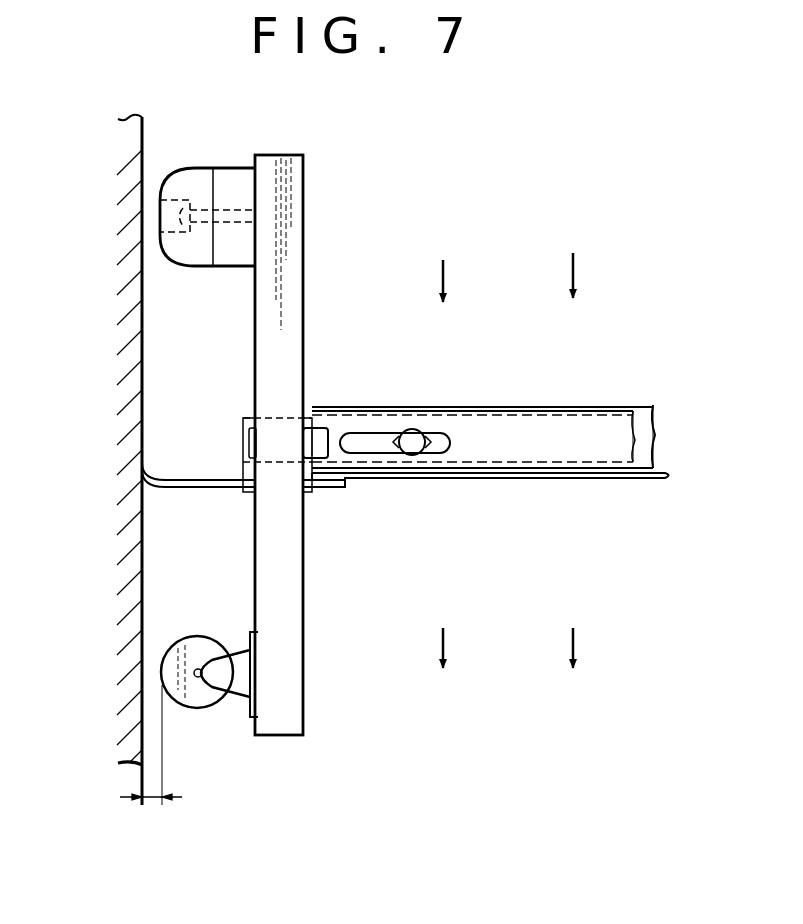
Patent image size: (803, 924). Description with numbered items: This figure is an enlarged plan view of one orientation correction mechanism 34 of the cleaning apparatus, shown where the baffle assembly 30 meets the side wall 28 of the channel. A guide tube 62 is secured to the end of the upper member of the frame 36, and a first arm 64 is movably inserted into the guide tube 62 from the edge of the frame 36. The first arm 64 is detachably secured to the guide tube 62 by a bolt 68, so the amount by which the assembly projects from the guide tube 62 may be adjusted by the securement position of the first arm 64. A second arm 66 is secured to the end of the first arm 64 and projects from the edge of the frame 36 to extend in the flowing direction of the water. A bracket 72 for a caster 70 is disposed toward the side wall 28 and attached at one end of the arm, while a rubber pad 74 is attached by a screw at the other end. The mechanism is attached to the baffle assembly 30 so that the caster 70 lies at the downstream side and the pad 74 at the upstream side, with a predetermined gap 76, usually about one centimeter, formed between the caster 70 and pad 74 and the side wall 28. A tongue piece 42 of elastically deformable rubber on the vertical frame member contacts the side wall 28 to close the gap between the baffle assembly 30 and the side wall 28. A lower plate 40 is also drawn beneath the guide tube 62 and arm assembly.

The side wall 28 is at (124, 722).
The baffle assembly 30 is at (618, 408).
The orientation correction mechanism 34 is at (314, 190).
The frame 36 is at (650, 440).
The bottom plate 40 is at (598, 478).
The tongue piece 42 is at (196, 488).
The guide tube 62 is at (523, 410).
The first arm 64 is at (476, 418).
The second arm 66 is at (290, 605).
The bolt 68 is at (412, 448).
The caster 70 is at (190, 705).
The bracket 72 is at (238, 700).
The rubber pad 74 is at (198, 185).
The gap 76 is at (152, 799).